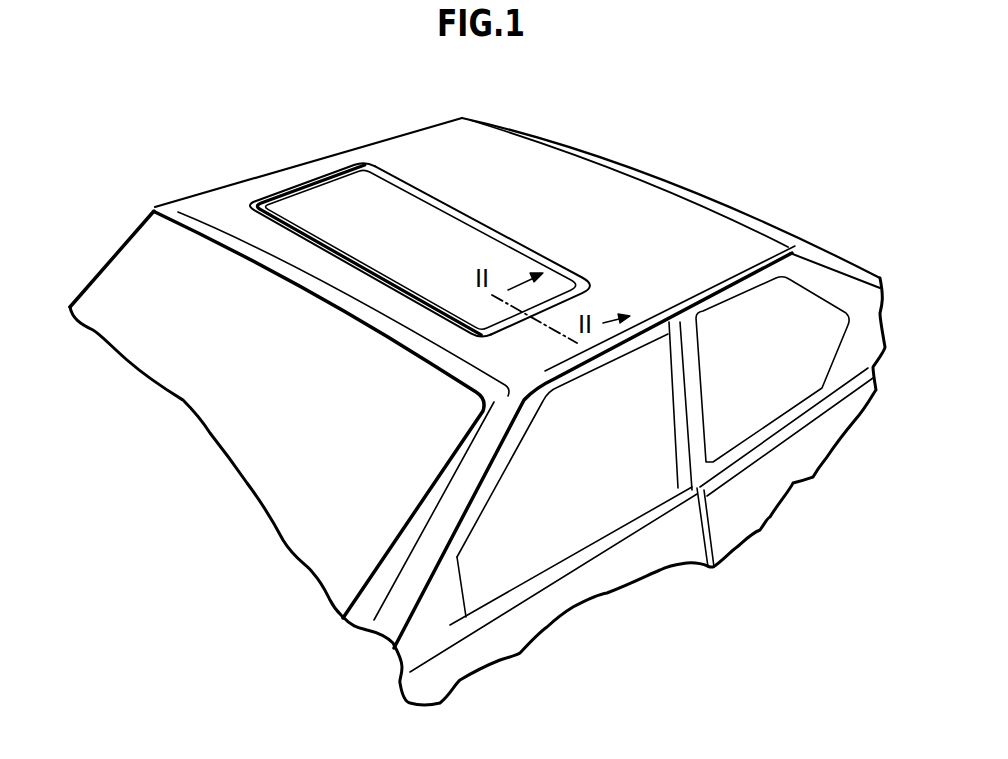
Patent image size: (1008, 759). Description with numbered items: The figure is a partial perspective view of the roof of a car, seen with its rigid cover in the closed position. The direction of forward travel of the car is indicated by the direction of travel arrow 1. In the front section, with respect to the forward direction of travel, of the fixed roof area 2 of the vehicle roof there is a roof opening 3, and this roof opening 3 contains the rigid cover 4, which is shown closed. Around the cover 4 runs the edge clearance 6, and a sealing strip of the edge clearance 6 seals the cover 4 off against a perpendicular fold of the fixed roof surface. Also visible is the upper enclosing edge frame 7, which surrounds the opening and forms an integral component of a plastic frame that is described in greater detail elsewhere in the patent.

The direction of travel arrow 1 is at (118, 428).
The fixed roof area 2 is at (630, 193).
The roof opening 3 is at (496, 227).
The rigid cover 4 is at (412, 263).
The edge clearance 6 is at (600, 291).
The upper enclosing edge frame 7 is at (307, 190).